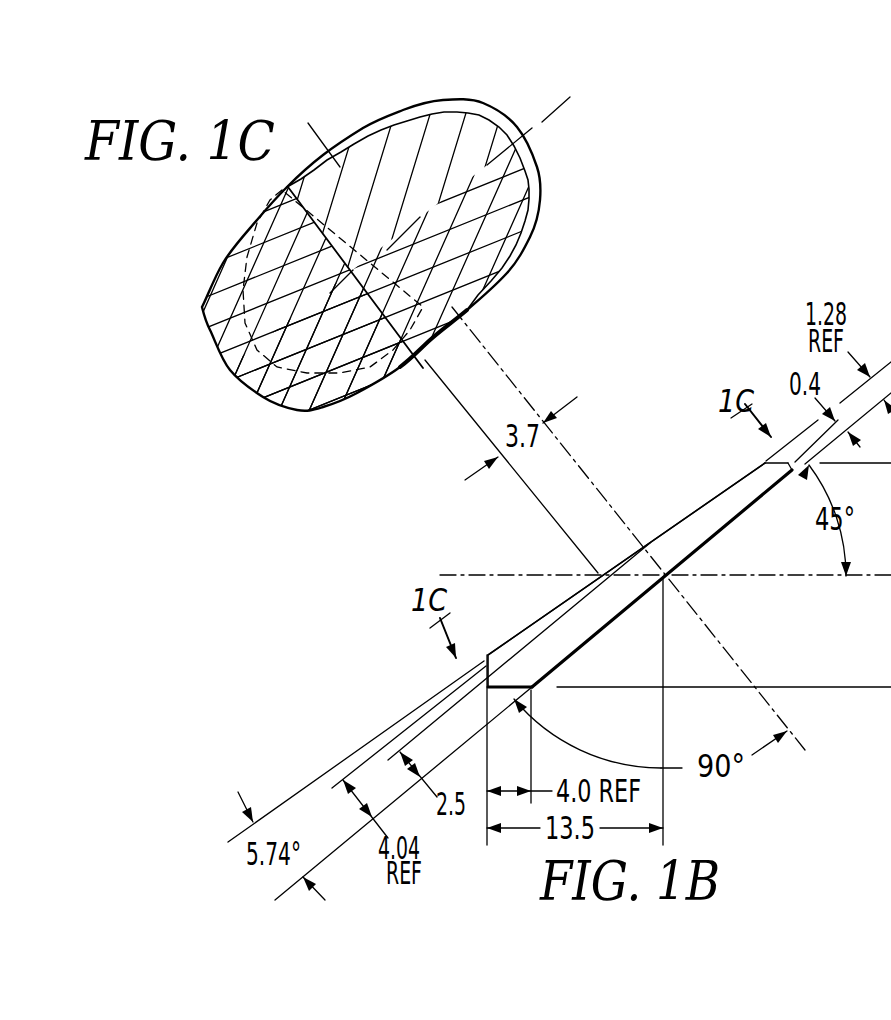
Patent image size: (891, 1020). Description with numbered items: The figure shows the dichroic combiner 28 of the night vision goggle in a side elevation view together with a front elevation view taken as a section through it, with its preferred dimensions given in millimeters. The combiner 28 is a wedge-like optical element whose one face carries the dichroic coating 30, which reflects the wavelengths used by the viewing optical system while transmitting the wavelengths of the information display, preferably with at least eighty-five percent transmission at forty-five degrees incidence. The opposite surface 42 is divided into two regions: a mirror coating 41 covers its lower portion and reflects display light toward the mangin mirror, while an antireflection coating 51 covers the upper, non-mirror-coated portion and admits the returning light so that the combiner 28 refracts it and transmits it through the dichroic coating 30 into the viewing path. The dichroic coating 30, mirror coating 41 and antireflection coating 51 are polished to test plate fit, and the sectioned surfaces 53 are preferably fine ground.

In FIG. 1C, the dichroic combiner 28 is at (430, 99).
In FIG. 1B, the dichroic combiner 28 is at (500, 700).
In FIG. 1B, the dichroic coating 30 is at (603, 629).
In FIG. 1C, the mirror coating 41 is at (304, 316).
In FIG. 1B, the mirror coating 41 is at (523, 631).
In FIG. 1C, the surface 42 is at (396, 342).
In FIG. 1B, the surface 42 is at (653, 545).
In FIG. 1C, the antireflection coating 51 is at (484, 214).
In FIG. 1B, the antireflection coating 51 is at (721, 494).
In FIG. 1C, the surfaces 53 is at (489, 109).